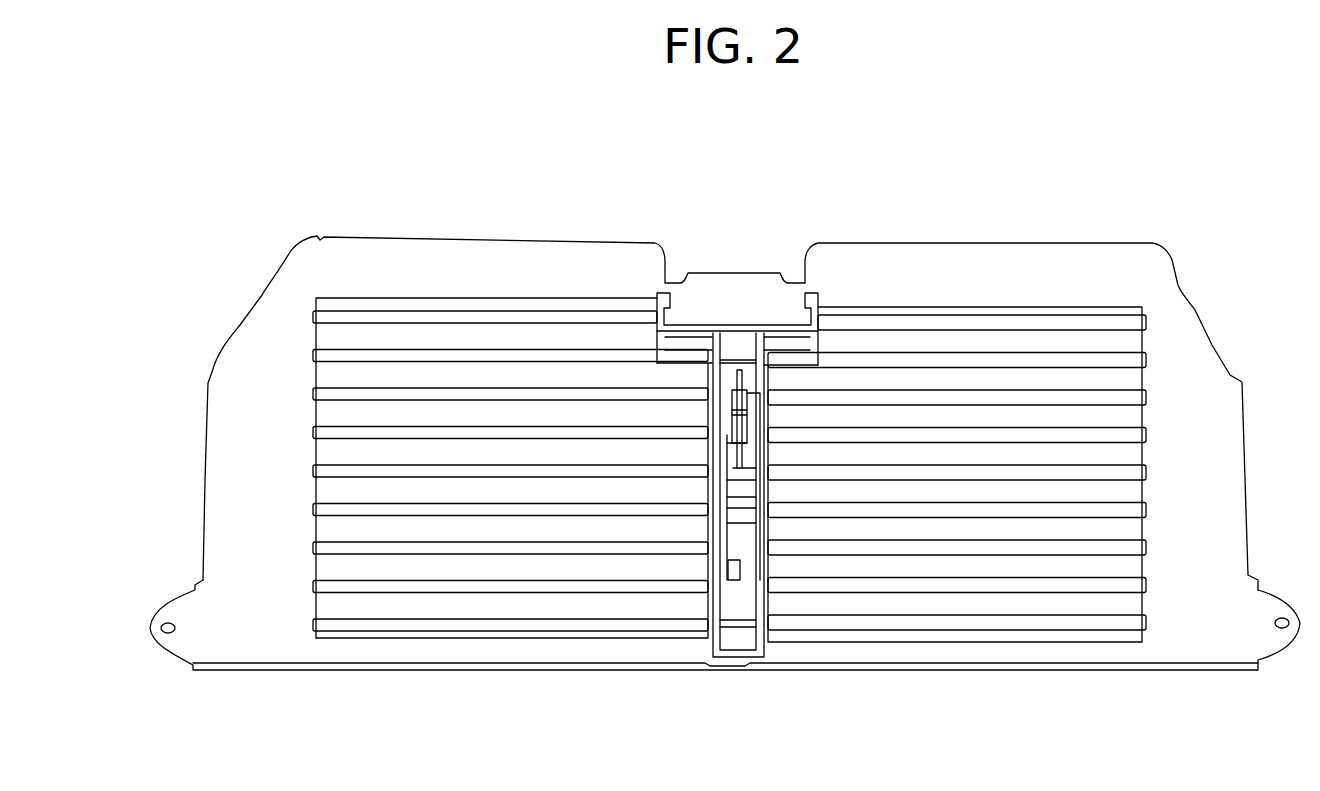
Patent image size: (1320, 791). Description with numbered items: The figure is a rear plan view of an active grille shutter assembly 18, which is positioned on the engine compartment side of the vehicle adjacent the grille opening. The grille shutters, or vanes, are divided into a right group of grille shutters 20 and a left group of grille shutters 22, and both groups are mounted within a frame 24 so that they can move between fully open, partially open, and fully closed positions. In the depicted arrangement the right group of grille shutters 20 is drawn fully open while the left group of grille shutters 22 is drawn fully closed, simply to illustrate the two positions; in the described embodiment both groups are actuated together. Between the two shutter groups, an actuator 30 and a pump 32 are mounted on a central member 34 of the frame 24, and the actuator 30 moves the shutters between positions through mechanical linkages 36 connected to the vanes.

The active grille shutter assembly 18 is at (277, 690).
The right group of grille shutters 20 is at (560, 627).
The left group of grille shutters 22 is at (872, 622).
The frame 24 is at (205, 456).
The actuator 30 is at (740, 372).
The pump 32 is at (740, 577).
The central member 34 is at (740, 667).
The mechanical linkages 36 is at (693, 330).